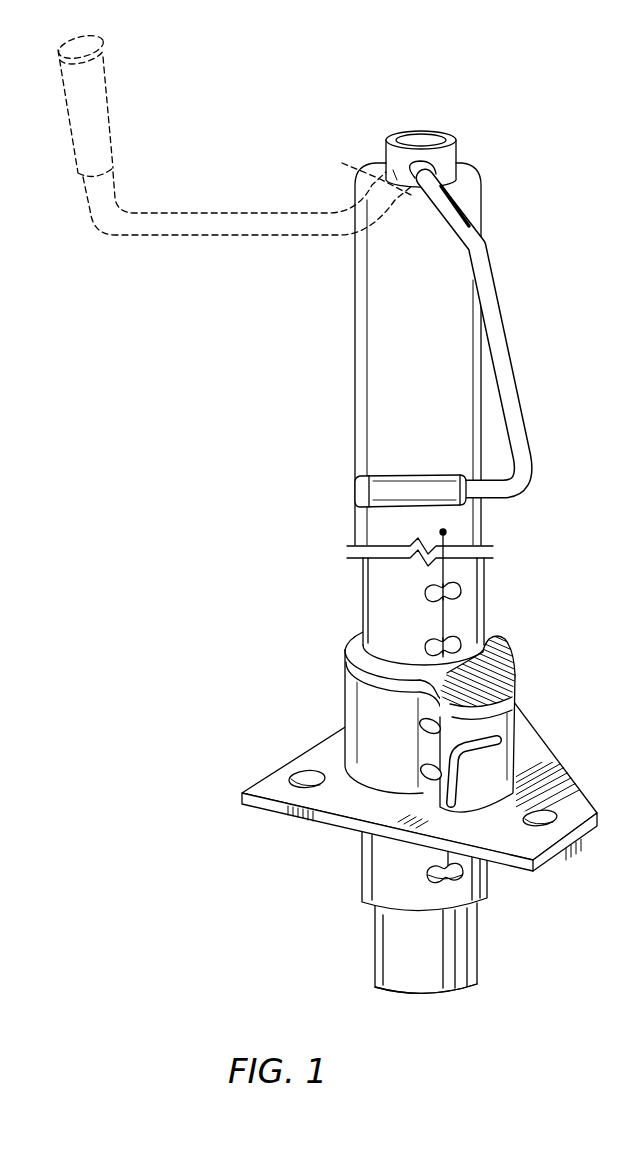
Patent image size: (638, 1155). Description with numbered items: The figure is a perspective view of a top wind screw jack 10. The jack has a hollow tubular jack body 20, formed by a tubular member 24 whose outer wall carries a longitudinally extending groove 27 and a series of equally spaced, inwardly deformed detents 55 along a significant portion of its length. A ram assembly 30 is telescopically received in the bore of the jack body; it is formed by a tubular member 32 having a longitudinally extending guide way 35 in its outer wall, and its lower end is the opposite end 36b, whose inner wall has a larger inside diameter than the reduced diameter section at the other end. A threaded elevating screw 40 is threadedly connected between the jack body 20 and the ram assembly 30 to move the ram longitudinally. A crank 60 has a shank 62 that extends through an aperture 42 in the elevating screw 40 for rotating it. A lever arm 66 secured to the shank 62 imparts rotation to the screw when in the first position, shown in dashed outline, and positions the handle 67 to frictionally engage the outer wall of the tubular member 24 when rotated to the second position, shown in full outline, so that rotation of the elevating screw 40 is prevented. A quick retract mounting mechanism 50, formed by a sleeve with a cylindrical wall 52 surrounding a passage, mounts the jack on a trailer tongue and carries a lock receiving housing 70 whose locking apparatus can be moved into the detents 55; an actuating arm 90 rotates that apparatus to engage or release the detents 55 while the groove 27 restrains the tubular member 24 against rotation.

The screw jack 10 is at (378, 354).
The jack body 20 is at (383, 587).
The tubular member 24 is at (354, 373).
The groove 27 is at (438, 617).
The ram assembly 30 is at (486, 918).
The tubular member 32 is at (420, 971).
The guide way 35 is at (452, 960).
The opposite end 36b is at (400, 993).
The elevating screw 40 is at (413, 133).
The aperture 42 is at (417, 136).
The mounting mechanism 50 is at (434, 700).
The cylindrical wall 52 is at (403, 683).
The detents 55 is at (463, 877).
The crank 60 is at (316, 269).
The shank 62 is at (387, 152).
The lever arm 66 is at (500, 194).
The handle 67 is at (393, 487).
The lock receiving housing 70 is at (497, 727).
The actuating arm 90 is at (463, 806).